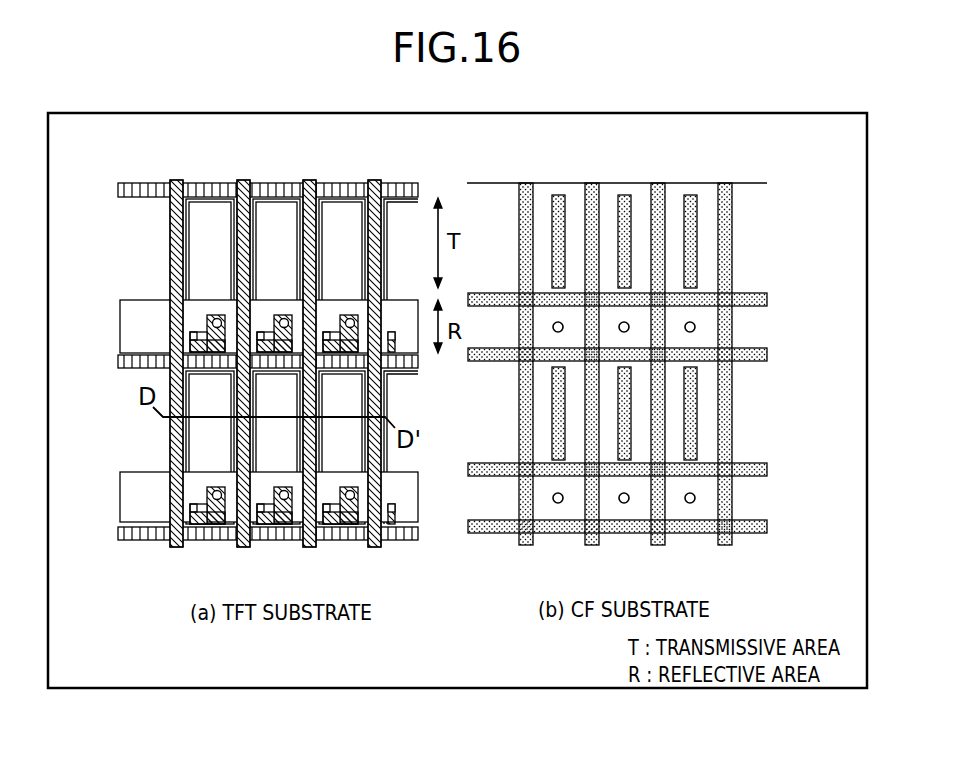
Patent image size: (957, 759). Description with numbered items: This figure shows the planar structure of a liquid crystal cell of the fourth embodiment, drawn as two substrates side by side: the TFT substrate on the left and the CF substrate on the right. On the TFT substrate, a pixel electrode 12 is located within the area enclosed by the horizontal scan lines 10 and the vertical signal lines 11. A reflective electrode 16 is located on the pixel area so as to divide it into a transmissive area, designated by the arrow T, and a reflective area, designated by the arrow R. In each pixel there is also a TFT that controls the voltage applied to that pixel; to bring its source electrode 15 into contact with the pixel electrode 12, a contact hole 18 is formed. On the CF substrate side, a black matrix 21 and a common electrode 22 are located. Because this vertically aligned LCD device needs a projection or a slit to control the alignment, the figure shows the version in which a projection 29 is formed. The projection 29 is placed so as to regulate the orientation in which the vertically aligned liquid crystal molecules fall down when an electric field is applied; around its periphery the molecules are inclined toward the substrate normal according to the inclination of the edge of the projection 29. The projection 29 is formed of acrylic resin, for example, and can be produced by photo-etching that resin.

The scan line 10 is at (263, 187).
The signal line 11 is at (181, 183).
The pixel electrode 12 is at (334, 208).
The source electrode 15 is at (280, 541).
The reflective electrode 16 is at (119, 325).
The contact hole 18 is at (350, 541).
The black matrix 21 is at (526, 184).
The common electrode 22 is at (618, 190).
The projection 29 is at (690, 237).